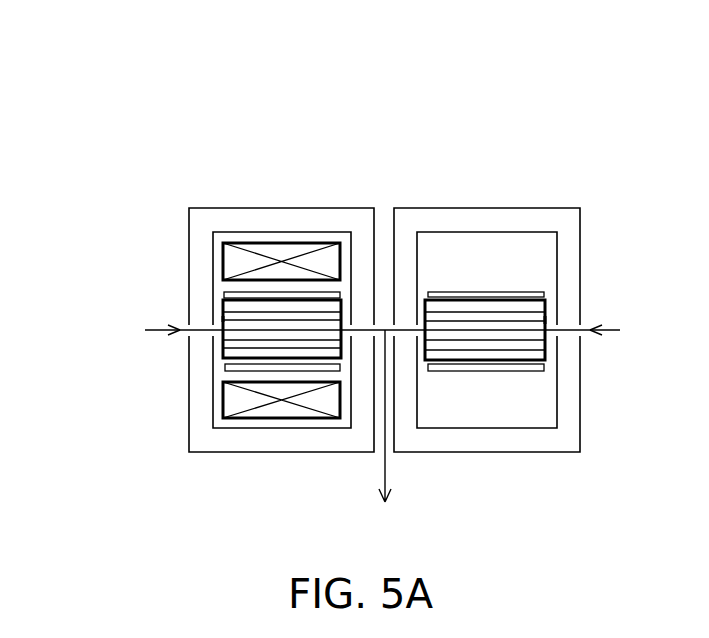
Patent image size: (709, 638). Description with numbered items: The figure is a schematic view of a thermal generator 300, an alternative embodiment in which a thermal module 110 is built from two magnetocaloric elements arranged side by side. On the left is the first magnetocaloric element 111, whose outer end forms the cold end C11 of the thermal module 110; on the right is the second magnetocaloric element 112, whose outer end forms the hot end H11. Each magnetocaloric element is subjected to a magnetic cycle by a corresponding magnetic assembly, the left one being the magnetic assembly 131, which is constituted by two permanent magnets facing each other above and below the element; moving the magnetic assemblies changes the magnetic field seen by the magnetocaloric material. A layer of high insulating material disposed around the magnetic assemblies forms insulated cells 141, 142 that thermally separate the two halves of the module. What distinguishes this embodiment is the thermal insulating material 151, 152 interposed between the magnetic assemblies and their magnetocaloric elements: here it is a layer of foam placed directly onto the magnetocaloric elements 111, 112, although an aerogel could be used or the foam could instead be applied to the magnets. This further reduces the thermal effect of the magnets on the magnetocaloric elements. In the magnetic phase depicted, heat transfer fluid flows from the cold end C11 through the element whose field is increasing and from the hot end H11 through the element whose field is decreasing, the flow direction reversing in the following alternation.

The thermal generator 300 is at (544, 82).
The thermal module 110 is at (365, 193).
The first magnetocaloric element 111 is at (256, 349).
The second magnetocaloric element 112 is at (507, 343).
The magnetic assembly 131 is at (288, 397).
The insulated cell 141 is at (303, 445).
The insulated cell 142 is at (444, 445).
The thermal insulating material 151 is at (315, 368).
The thermal insulating material 152 is at (443, 367).
The cold end C11 is at (222, 313).
The hot end H11 is at (545, 320).